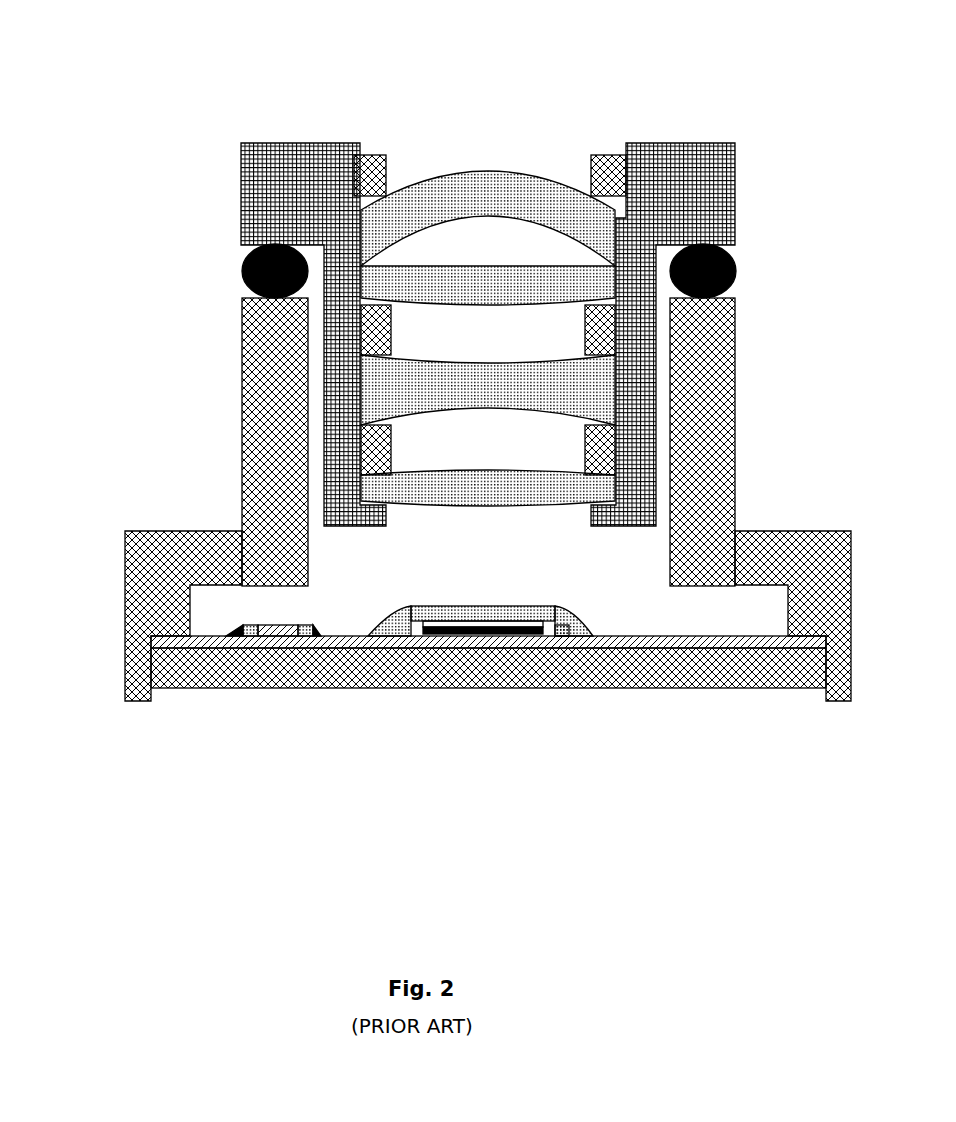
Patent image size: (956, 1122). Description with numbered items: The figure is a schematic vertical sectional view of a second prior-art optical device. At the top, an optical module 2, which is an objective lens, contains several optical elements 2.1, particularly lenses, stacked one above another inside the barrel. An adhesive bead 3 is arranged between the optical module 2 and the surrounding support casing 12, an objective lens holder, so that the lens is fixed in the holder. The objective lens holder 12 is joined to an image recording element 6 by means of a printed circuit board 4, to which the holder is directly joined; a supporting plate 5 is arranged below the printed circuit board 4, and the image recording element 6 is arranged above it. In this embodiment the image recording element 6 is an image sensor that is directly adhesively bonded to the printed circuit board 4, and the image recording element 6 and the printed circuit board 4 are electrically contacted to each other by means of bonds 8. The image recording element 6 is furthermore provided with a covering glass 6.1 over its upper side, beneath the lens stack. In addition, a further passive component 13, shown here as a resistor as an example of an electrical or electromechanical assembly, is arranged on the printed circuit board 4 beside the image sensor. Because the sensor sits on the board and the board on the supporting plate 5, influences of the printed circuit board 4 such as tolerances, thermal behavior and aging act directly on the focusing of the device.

The optical module 2 is at (283, 183).
The optical elements 2.1 is at (566, 483).
The adhesive bead 3 is at (263, 268).
The support casing 12 is at (262, 405).
The passive component 13 is at (260, 614).
The covering glass 6.1 is at (533, 603).
The image recording element 6 is at (527, 624).
The bonds 8 is at (555, 624).
The printed circuit board 4 is at (478, 637).
The supporting plate 5 is at (360, 668).